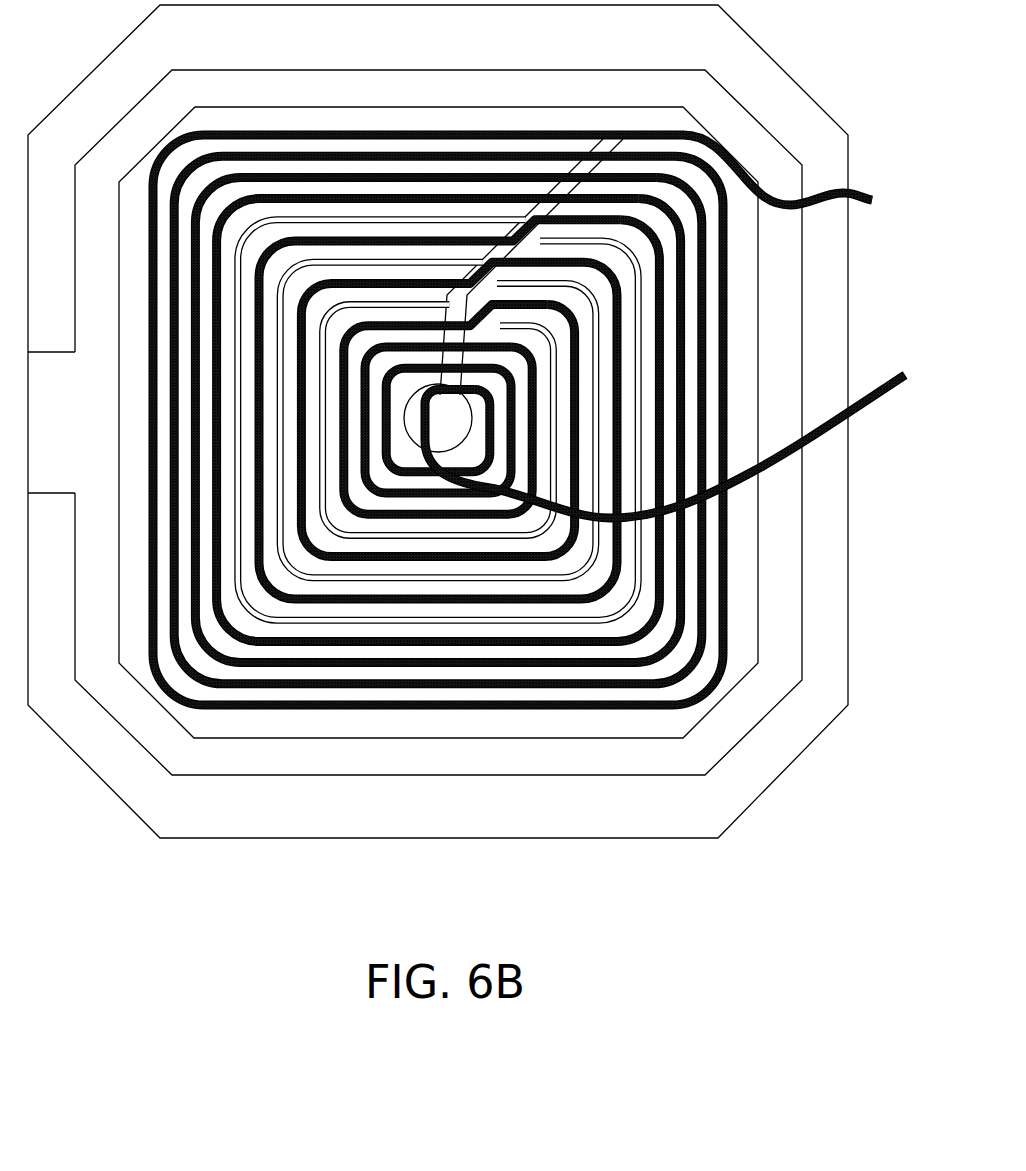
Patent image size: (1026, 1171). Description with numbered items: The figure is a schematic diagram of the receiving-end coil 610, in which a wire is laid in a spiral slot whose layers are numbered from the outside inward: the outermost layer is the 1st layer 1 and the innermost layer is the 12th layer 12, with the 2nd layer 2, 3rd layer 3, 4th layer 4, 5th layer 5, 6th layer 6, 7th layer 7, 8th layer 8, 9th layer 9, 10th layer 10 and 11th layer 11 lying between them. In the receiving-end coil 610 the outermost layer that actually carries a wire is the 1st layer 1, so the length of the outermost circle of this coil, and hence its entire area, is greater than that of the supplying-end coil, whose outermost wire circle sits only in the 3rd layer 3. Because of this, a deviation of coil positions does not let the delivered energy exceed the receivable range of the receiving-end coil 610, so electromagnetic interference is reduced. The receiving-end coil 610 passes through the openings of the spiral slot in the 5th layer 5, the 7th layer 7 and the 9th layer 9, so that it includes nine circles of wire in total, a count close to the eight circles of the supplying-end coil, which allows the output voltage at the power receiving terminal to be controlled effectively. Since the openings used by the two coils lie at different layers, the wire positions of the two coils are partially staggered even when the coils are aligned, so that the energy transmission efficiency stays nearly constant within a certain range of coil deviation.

The 1st layer of the spiral slot 1 is at (290, 136).
The 2nd layer of the spiral slot 2 is at (300, 157).
The 3rd layer of the spiral slot 3 is at (311, 179).
The 4th layer of the spiral slot 4 is at (320, 200).
The 5th layer of the spiral slot 5 is at (333, 221).
The 6th layer of the spiral slot 6 is at (346, 242).
The 7th layer of the spiral slot 7 is at (356, 263).
The 8th layer of the spiral slot 8 is at (366, 284).
The 9th layer of the spiral slot 9 is at (380, 305).
The 10th layer of the spiral slot 10 is at (402, 326).
The 11th layer of the spiral slot 11 is at (418, 347).
The 12th layer of the spiral slot 12 is at (434, 370).
The receiving-end coil 610 is at (213, 186).